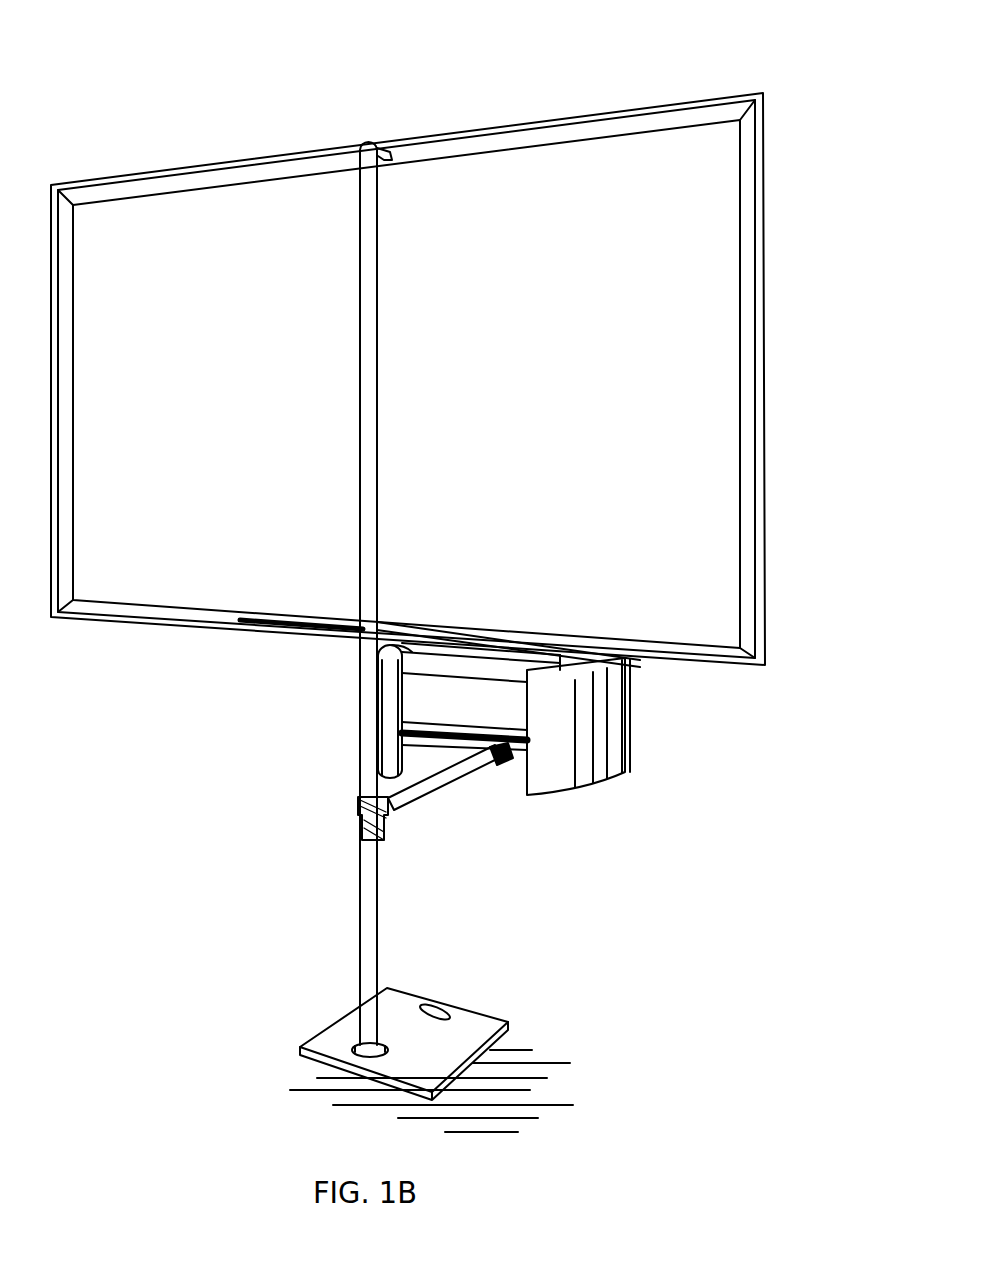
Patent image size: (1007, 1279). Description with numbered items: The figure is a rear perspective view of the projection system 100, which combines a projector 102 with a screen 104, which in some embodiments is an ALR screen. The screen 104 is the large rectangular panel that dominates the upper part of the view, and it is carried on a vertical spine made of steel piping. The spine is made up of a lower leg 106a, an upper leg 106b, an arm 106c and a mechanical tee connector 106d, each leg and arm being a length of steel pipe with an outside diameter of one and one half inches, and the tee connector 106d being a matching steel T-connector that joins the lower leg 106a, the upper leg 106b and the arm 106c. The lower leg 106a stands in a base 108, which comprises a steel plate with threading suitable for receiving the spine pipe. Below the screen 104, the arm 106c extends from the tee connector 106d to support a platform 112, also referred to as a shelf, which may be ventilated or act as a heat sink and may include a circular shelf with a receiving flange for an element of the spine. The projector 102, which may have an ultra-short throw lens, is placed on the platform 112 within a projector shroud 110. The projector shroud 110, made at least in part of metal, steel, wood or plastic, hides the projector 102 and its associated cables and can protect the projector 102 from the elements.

The projection system 100 is at (182, 71).
The projector 102 is at (420, 697).
The screen 104 is at (763, 585).
The lower leg 106a is at (378, 905).
The upper leg 106b is at (360, 737).
The arm 106c is at (437, 797).
The mechanical tee connector 106d is at (360, 815).
The base 108 is at (318, 1030).
The projector shroud 110 is at (632, 745).
The platform 112 is at (510, 762).